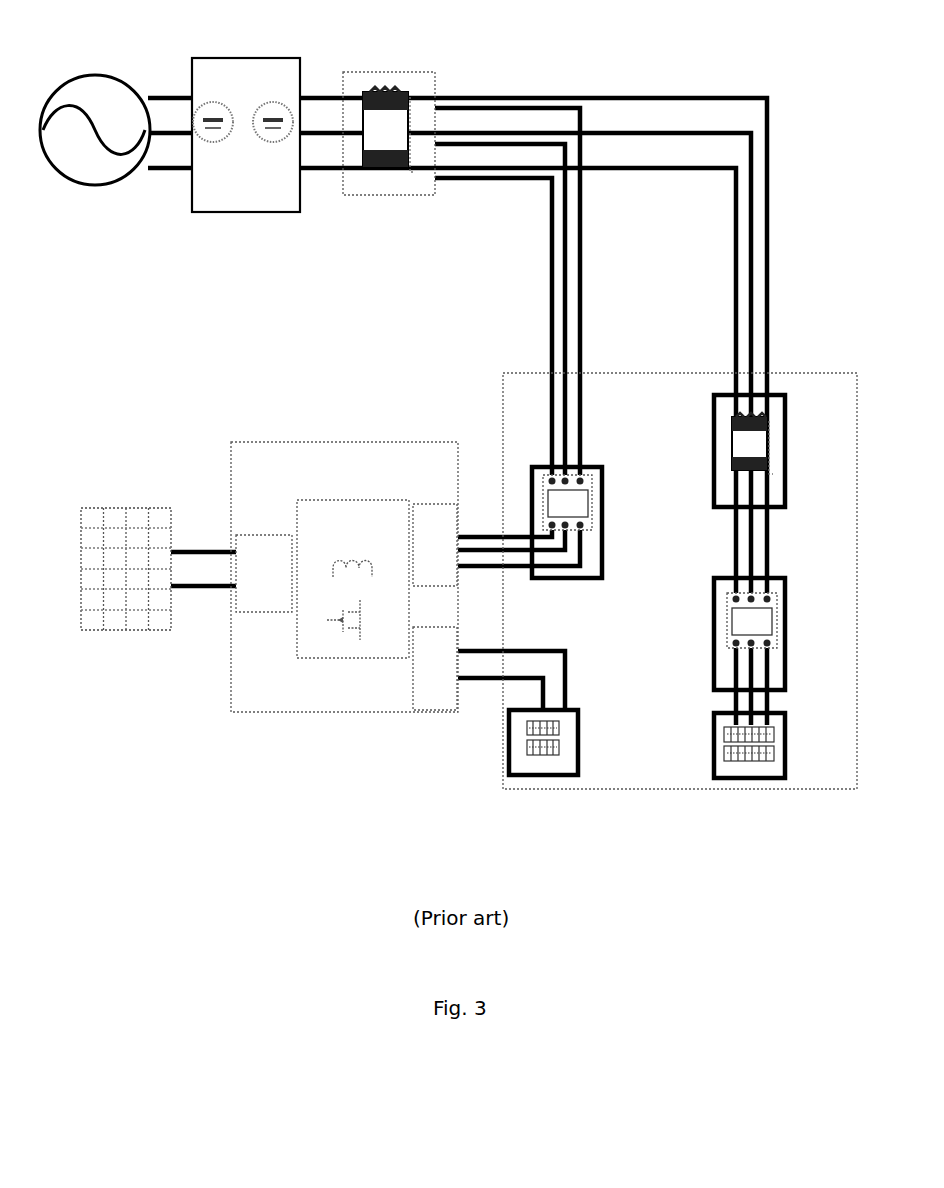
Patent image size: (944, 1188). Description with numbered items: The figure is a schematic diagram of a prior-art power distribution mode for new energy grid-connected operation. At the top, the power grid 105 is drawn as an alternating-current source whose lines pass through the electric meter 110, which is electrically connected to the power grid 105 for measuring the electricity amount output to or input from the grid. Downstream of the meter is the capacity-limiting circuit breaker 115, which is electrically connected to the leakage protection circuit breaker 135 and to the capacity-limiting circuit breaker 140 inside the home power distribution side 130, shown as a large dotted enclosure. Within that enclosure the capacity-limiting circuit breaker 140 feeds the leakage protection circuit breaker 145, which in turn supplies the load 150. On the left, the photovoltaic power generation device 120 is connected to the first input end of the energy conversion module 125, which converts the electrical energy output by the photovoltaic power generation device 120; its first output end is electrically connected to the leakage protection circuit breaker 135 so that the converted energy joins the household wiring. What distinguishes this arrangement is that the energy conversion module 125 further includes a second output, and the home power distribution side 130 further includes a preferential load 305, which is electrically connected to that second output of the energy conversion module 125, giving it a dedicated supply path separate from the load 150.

The power grid 105 is at (105, 73).
The electric meter 110 is at (245, 57).
The capacity-limiting circuit breaker 115 is at (385, 70).
The photovoltaic power generation device 120 is at (122, 507).
The energy conversion module 125 is at (345, 440).
The home power distribution side 130 is at (615, 371).
The leakage protection circuit breaker 135 is at (603, 466).
The capacity-limiting circuit breaker 140 is at (772, 392).
The leakage protection circuit breaker 145 is at (772, 577).
The load 150 is at (772, 712).
The preferential load 305 is at (579, 709).